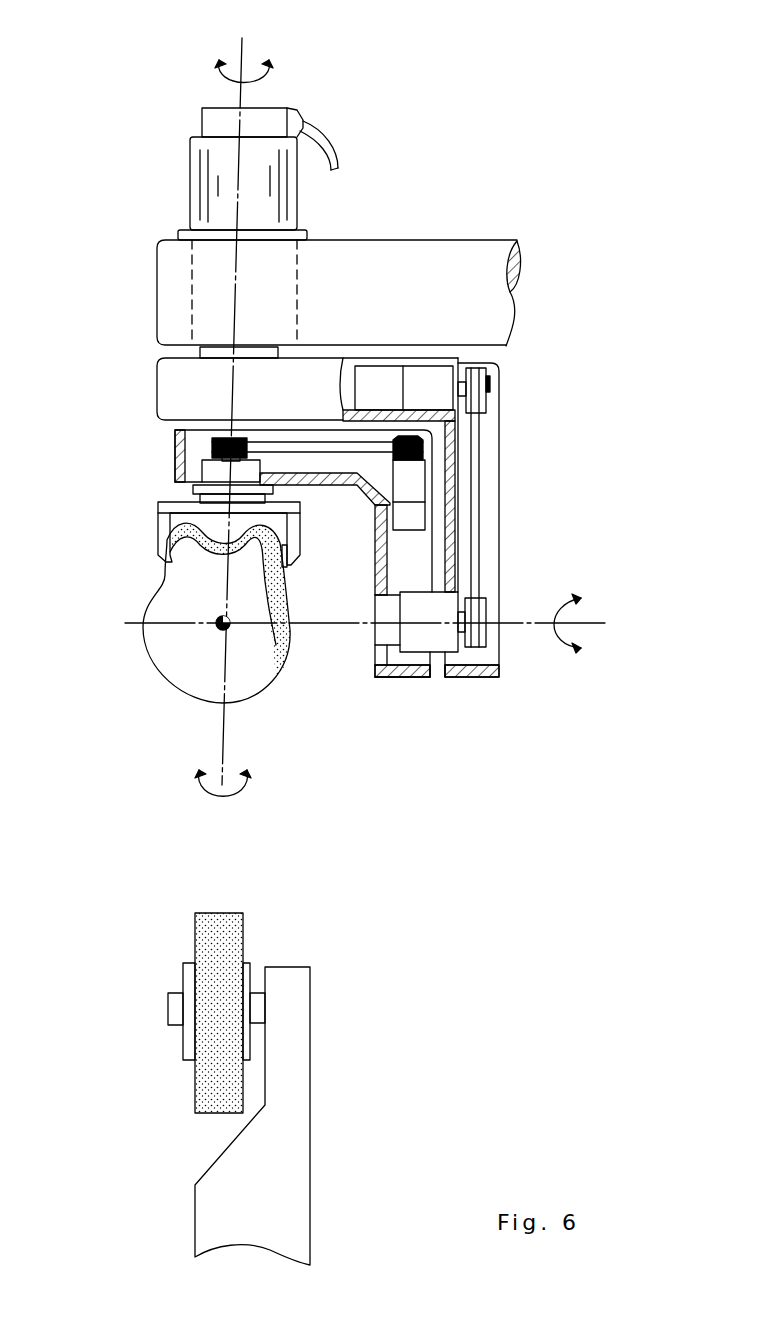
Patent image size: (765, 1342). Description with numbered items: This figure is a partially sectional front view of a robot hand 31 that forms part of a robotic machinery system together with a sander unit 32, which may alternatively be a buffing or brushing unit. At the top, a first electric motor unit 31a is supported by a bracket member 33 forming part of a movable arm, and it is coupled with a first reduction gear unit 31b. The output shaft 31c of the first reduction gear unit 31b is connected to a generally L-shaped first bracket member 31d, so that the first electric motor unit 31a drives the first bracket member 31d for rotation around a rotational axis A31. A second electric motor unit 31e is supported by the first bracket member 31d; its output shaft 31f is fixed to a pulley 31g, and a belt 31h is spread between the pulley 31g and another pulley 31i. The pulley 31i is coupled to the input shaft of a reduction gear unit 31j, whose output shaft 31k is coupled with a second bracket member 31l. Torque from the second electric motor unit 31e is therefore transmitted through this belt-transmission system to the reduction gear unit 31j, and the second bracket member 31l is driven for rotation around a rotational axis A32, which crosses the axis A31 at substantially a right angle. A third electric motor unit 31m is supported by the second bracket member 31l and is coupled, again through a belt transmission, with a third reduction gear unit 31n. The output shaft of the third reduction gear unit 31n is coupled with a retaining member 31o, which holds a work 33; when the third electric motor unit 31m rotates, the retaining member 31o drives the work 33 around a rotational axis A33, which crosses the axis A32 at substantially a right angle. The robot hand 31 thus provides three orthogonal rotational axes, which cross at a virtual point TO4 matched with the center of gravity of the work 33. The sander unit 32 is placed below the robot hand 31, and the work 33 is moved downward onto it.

The robot hand 31 is at (539, 168).
The first electric motor unit 31a is at (190, 173).
The first reduction gear unit 31b is at (187, 292).
The output shaft of the first reduction gear unit 31c is at (197, 355).
The first bracket member 31d is at (163, 396).
The second electric motor unit 31e is at (437, 372).
The output shaft of the second electric motor unit 31f is at (460, 368).
The pulley 31g is at (498, 418).
The belt 31h is at (480, 462).
The pulley 31i is at (487, 603).
The reduction gear unit 31j is at (438, 678).
The output shaft of the reduction gear unit 31k is at (380, 633).
The second bracket member 31l is at (388, 678).
The third electric motor unit 31m is at (391, 484).
The third reduction gear unit 31n is at (212, 469).
The retaining member 31o is at (161, 533).
The sander unit 32 is at (336, 946).
The bracket member / work 33 is at (417, 240).
The rotational axis A31 is at (246, 50).
The rotational axis A32 is at (597, 627).
The rotational axis A33 is at (225, 742).
The virtual point TO4 is at (219, 633).